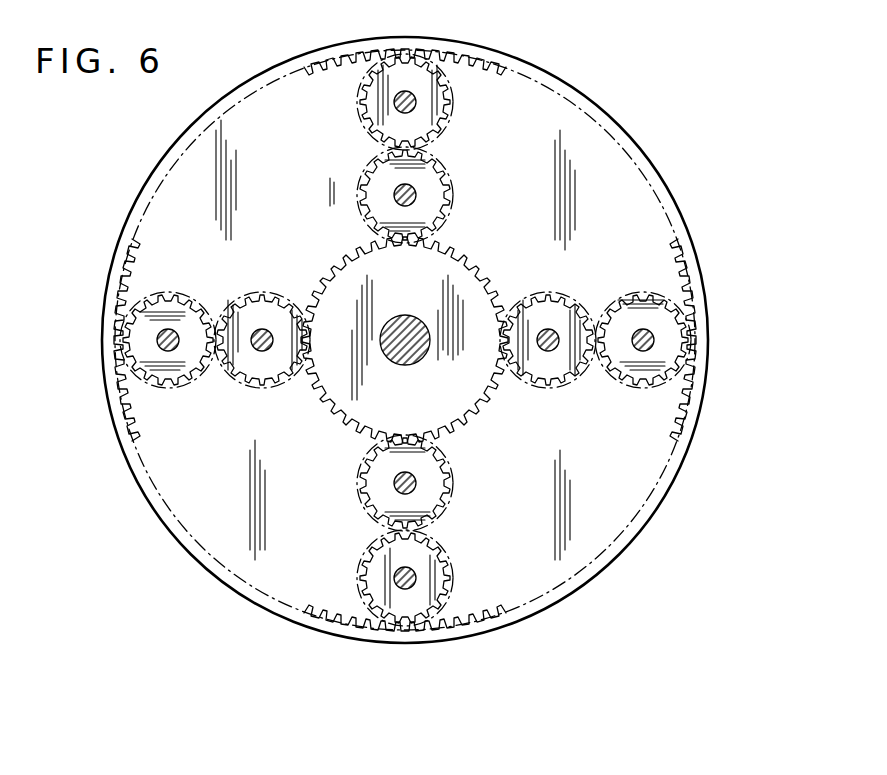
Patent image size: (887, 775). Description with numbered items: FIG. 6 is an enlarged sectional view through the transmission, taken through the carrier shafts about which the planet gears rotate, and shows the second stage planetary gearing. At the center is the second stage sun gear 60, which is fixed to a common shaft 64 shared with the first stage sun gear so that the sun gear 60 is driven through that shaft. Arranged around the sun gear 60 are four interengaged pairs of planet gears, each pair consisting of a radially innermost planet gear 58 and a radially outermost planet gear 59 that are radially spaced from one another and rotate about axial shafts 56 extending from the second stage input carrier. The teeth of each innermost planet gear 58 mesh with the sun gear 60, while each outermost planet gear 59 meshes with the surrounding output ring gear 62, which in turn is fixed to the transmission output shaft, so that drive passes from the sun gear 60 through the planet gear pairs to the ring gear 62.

The axial shafts 56 is at (417, 98).
The radially innermost planet gear 58 is at (366, 197).
The radially outermost planet gear 59 is at (362, 103).
The second stage sun gear 60 is at (465, 293).
The output ring gear 62 is at (585, 103).
The common shaft 64 is at (418, 360).